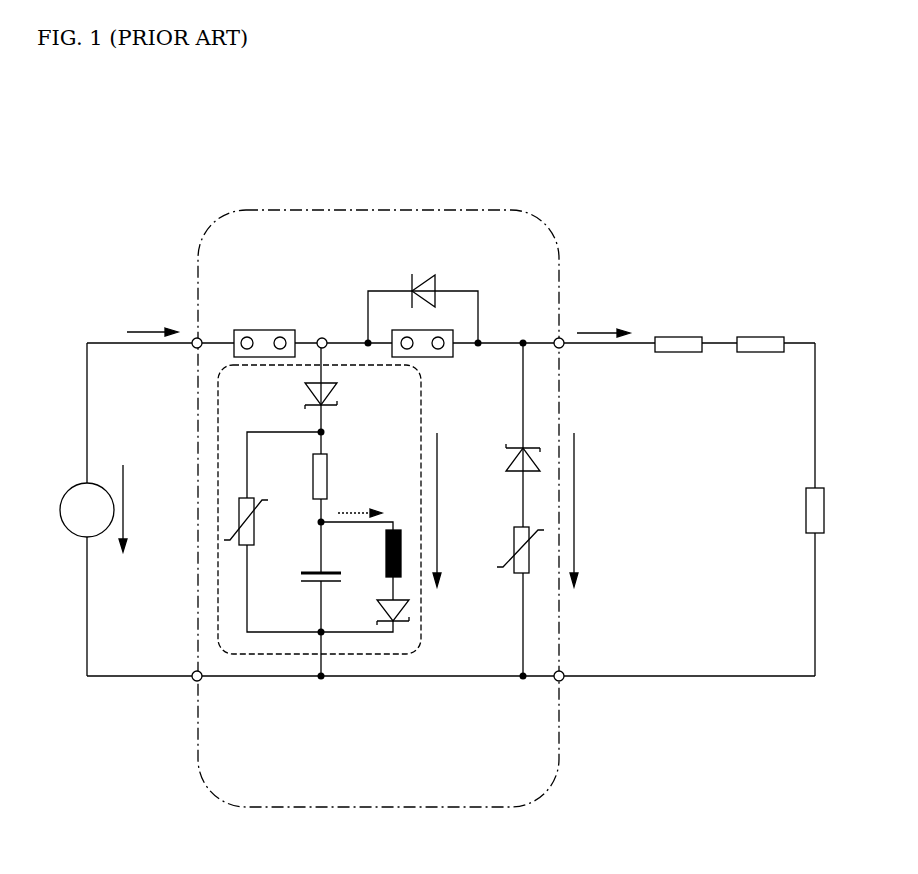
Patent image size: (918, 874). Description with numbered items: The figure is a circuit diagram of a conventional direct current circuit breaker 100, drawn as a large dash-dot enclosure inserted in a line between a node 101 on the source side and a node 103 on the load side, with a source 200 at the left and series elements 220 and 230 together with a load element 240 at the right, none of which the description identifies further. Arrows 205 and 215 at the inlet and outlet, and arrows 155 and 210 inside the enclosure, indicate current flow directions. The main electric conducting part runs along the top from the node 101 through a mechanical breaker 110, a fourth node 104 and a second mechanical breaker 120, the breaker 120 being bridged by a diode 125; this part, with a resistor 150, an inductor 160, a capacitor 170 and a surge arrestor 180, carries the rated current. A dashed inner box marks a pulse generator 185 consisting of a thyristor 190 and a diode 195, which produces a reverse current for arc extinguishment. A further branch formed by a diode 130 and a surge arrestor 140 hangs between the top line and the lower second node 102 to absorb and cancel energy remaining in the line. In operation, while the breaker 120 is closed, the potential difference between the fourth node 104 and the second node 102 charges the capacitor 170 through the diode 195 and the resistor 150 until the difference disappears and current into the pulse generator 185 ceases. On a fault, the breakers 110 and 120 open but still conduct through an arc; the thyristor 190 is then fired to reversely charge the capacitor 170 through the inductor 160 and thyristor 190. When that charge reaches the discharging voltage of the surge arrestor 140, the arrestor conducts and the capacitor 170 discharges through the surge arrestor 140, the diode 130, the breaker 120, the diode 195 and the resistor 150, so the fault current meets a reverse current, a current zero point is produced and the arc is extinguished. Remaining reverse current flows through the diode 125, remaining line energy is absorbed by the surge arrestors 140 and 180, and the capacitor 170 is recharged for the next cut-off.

The direct current circuit breaker 100 is at (363, 208).
The input terminal 101 is at (194, 347).
The second node 102 is at (193, 680).
The output terminal 103 is at (563, 347).
The fourth node 104 is at (322, 337).
The mechanical breaker 110 is at (262, 330).
The mechanical breaker 120 is at (440, 358).
The diode 125 is at (427, 273).
The diode 130 is at (508, 462).
The surge arrestor 140 is at (512, 548).
The resistor 150 is at (328, 476).
The current flow arrow 155 is at (440, 505).
The inductor 160 is at (386, 547).
The capacitor 170 is at (305, 570).
The surge arrestor 180 is at (250, 498).
The pulse generator 185 is at (422, 618).
The thyristor 190 is at (377, 613).
The diode 195 is at (337, 392).
The voltage source 200 is at (127, 505).
The input current arrow 205 is at (143, 330).
The current flow arrow 210 is at (577, 505).
The output current arrow 215 is at (597, 331).
The resistor 220 is at (679, 337).
The resistor 230 is at (752, 337).
The load resistor 240 is at (806, 512).